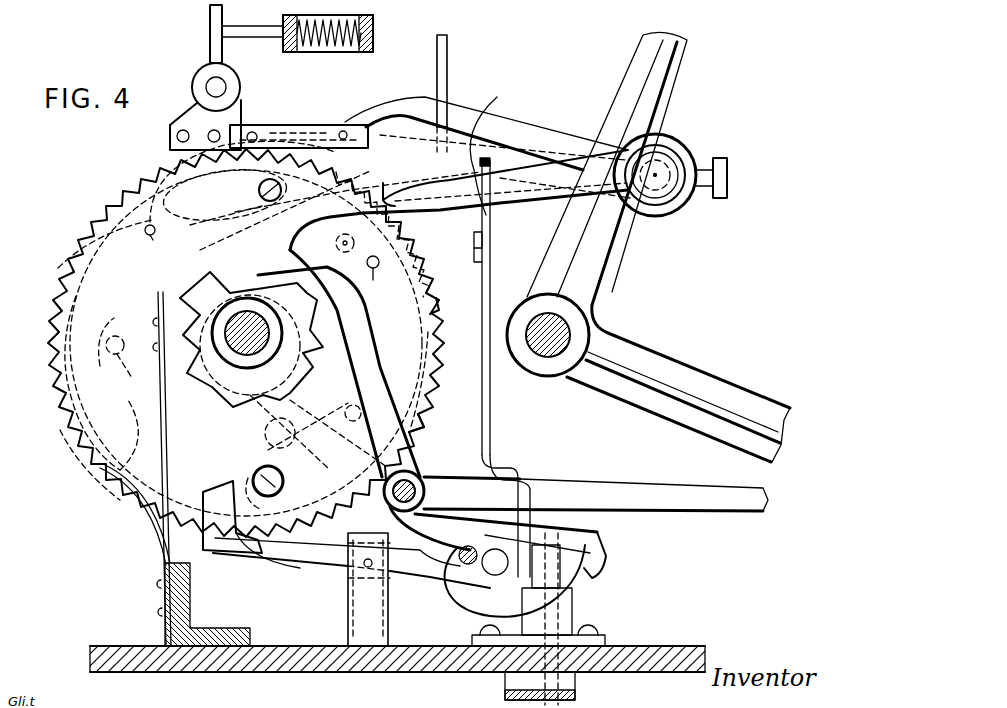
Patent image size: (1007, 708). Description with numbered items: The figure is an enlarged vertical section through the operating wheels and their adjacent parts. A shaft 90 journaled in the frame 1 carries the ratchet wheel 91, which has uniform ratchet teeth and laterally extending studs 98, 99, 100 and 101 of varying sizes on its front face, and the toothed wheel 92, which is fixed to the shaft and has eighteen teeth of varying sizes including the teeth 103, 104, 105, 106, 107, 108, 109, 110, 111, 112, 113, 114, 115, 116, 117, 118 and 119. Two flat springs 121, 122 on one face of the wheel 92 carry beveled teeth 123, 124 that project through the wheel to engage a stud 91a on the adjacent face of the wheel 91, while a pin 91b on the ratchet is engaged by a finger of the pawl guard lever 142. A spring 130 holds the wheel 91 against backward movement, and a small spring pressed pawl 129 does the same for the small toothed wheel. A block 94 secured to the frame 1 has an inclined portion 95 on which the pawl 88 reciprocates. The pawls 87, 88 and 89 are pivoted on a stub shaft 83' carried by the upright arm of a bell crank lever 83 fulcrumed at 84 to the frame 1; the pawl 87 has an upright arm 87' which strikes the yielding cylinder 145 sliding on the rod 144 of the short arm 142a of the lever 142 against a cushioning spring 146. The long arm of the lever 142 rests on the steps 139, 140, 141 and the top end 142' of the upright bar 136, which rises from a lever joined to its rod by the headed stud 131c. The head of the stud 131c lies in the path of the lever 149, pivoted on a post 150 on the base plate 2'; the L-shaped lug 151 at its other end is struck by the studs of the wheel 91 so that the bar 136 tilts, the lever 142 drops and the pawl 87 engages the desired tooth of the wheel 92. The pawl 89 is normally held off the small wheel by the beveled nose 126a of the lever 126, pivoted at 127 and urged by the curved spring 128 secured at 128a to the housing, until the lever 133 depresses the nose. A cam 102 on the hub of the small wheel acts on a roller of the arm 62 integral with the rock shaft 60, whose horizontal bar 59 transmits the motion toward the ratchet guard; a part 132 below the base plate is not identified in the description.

The frame 1 is at (116, 645).
The base plate 2' is at (397, 671).
The horizontal bar 59 is at (728, 506).
The rock shaft 60 is at (420, 480).
The arm 62 is at (268, 408).
The bell crank lever 83 is at (658, 247).
The stub shaft 83' is at (669, 162).
The fulcrum 84 is at (546, 360).
The pawl 87 is at (620, 175).
The arm of pawl 87' is at (458, 93).
The pawl 88 is at (486, 133).
The pawl 89 is at (495, 181).
The shaft 90 is at (245, 322).
The ratchet wheel 91 is at (74, 270).
The stud 91a is at (133, 373).
The pin 91b is at (385, 175).
The toothed wheel 92 is at (100, 206).
The block 94 is at (340, 125).
The inclined portion 95 is at (290, 127).
The stud 98 is at (161, 238).
The stud 99 is at (262, 184).
The stud 100 is at (375, 274).
The stud 101 is at (280, 488).
The cam 102 is at (304, 272).
The tooth 103 is at (357, 192).
The tooth 104 is at (364, 239).
The tooth 105 is at (383, 234).
The tooth 106 is at (442, 306).
The tooth 107 is at (413, 381).
The tooth 108 is at (433, 435).
The tooth 109 is at (338, 435).
The tooth 110 is at (308, 446).
The tooth 111 is at (230, 562).
The tooth 112 is at (219, 507).
The tooth 113 is at (92, 466).
The tooth 114 is at (92, 420).
The tooth 115 is at (106, 346).
The tooth 116 is at (80, 306).
The tooth 117 is at (86, 265).
The tooth 118 is at (162, 196).
The tooth 119 is at (224, 195).
The flat spring 121 is at (278, 232).
The flat spring 122 is at (290, 432).
The beveled tooth 123 is at (250, 210).
The beveled tooth 124 is at (350, 404).
The lever 126 is at (372, 358).
The beveled pawl-like nose 126a is at (258, 275).
The pivot 127 is at (390, 508).
The curved spring 128 is at (474, 616).
The spring anchorage 128a is at (468, 546).
The spring pressed pawl 129 is at (158, 292).
The spring 130 is at (138, 508).
The headed stud 131c is at (496, 549).
The bolt 132 is at (566, 692).
The lever 133 is at (590, 586).
The upright bar 136 is at (490, 448).
The step 139 is at (492, 260).
The step 140 is at (492, 238).
The step 141 is at (475, 190).
The pawl guard lever 142 is at (468, 307).
The top end of upright bar 142' is at (492, 150).
The upright short arm 142a is at (210, 24).
The rod 144 is at (250, 28).
The cylinder 145 is at (362, 48).
The cushioning spring 146 is at (300, 52).
The vertically swinging lever 149 is at (425, 578).
The post 150 is at (348, 606).
The L-shaped lug 151 is at (222, 484).